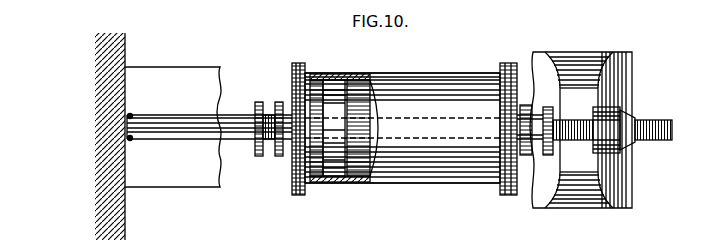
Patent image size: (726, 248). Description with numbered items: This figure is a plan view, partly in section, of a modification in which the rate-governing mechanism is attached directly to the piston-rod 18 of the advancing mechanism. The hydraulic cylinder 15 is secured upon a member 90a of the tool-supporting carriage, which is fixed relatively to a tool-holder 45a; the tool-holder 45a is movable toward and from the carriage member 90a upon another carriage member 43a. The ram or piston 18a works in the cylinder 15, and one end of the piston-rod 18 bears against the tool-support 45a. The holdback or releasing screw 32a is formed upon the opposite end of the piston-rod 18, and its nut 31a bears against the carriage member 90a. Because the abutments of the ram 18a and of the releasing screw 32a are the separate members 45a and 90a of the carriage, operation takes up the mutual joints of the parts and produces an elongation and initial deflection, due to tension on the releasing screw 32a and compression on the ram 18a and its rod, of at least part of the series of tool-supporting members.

The hydraulic cylinder 15 is at (405, 184).
The piston-rod 18 is at (188, 115).
The ram 18a is at (332, 74).
The nut 31a is at (626, 152).
The holdback or releasing screw 32a is at (655, 120).
The carriage member 43a is at (171, 188).
The tool-holder 45a is at (86, 136).
The carriage member 90a is at (566, 206).